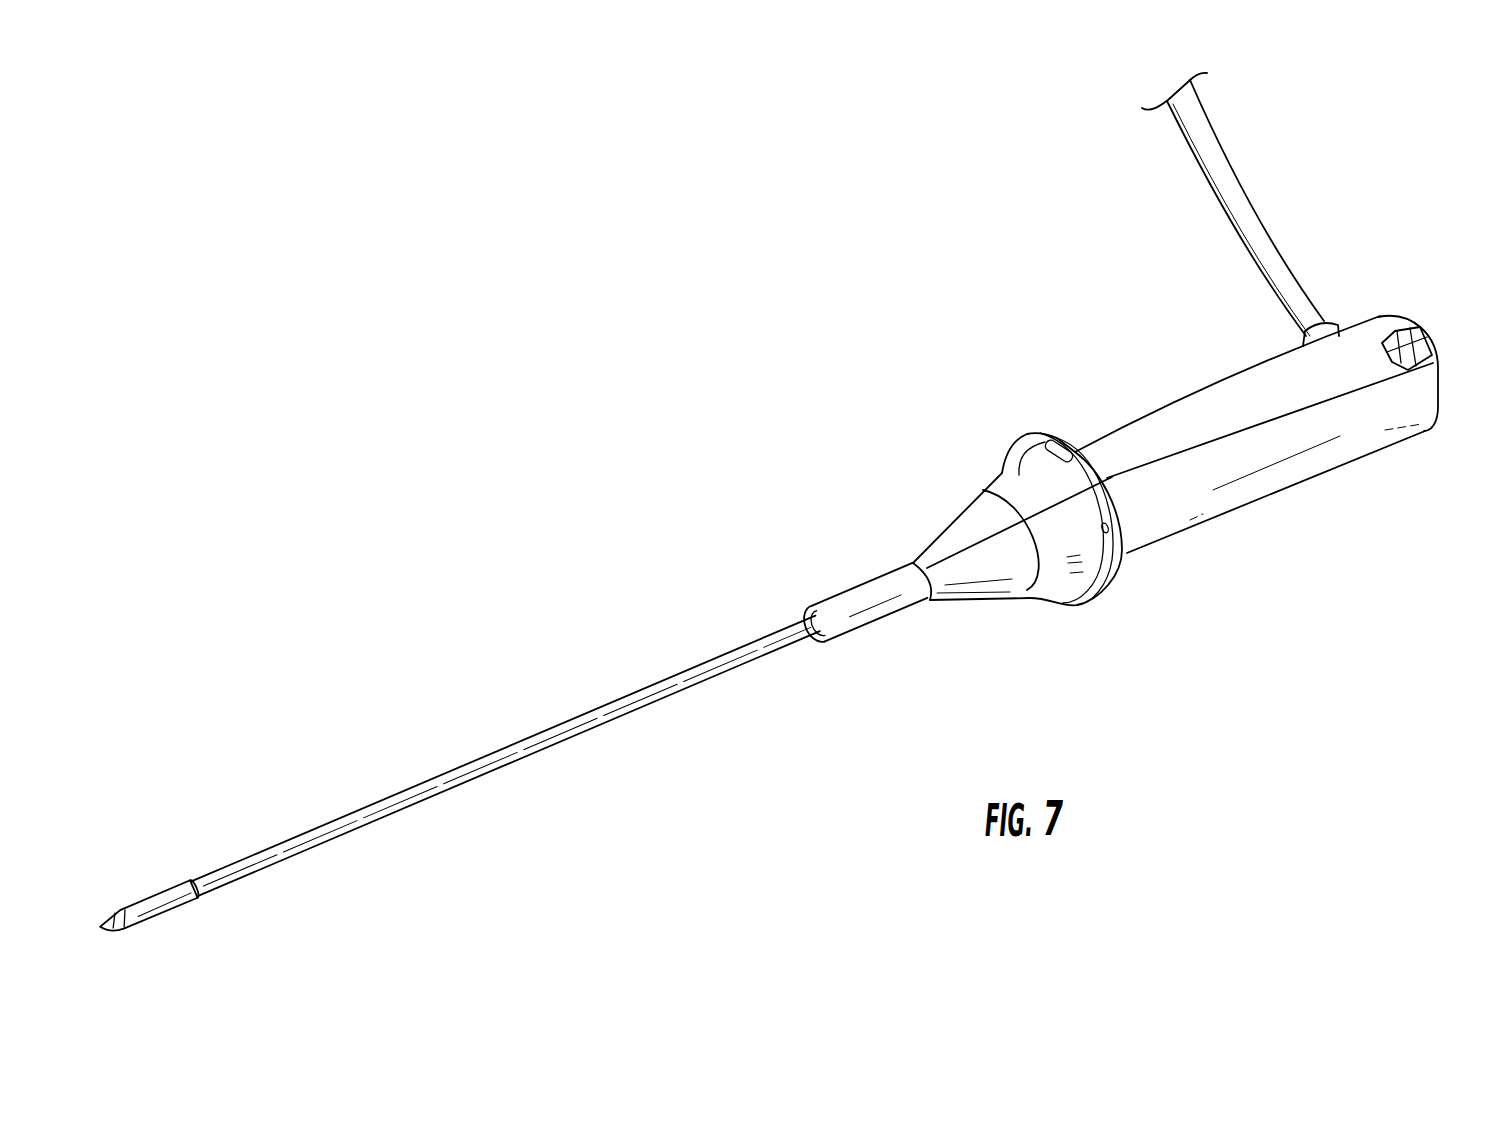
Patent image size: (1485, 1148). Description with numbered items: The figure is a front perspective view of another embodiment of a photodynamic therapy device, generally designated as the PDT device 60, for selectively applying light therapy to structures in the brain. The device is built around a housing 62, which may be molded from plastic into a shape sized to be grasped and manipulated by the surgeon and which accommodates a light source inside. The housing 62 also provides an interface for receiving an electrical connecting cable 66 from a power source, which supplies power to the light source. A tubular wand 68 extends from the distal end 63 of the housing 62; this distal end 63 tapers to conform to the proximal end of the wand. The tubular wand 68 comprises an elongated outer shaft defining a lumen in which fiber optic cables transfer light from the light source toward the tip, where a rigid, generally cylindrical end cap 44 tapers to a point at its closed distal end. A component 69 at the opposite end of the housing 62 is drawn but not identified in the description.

The end cap 44 is at (146, 902).
The PDT device 60 is at (943, 433).
The housing 62 is at (1188, 506).
The distal end of the housing 63 is at (807, 611).
The electrical connecting cable 66 is at (1224, 185).
The tubular wand 68 is at (507, 766).
The knob 69 is at (1440, 389).